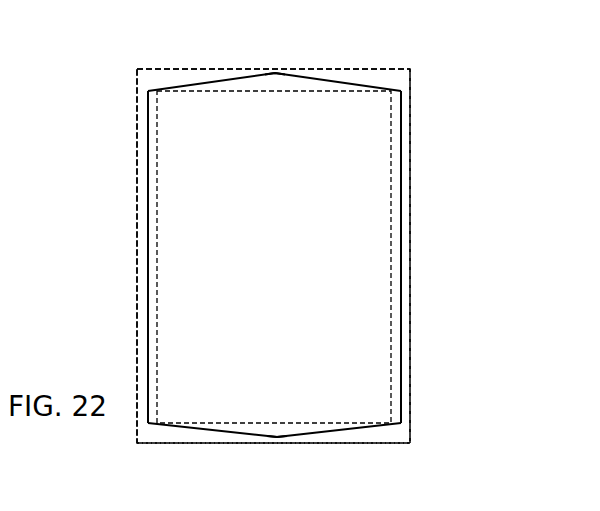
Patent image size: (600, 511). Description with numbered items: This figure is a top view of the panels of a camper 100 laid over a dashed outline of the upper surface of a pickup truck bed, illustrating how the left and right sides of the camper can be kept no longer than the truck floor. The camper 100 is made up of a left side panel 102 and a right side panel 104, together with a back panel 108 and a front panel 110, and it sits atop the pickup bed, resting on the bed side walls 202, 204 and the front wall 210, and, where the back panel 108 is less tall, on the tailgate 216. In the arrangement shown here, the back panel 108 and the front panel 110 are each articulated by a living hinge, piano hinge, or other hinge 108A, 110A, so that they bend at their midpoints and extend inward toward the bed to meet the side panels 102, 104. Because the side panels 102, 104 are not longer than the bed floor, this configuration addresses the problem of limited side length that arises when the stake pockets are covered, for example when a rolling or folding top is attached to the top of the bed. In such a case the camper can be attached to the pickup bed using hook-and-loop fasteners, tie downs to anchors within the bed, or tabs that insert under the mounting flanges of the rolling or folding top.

The camper 100 is at (403, 62).
The left side panel 102 is at (146, 305).
The right side panel 104 is at (405, 308).
The back panel 108 is at (362, 428).
The hinge 108A is at (278, 431).
The front panel 110 is at (190, 84).
The hinge 110A is at (275, 77).
The bed side wall 202 is at (136, 208).
The bed side wall 204 is at (413, 198).
The front wall 210 is at (359, 68).
The tailgate 216 is at (192, 445).